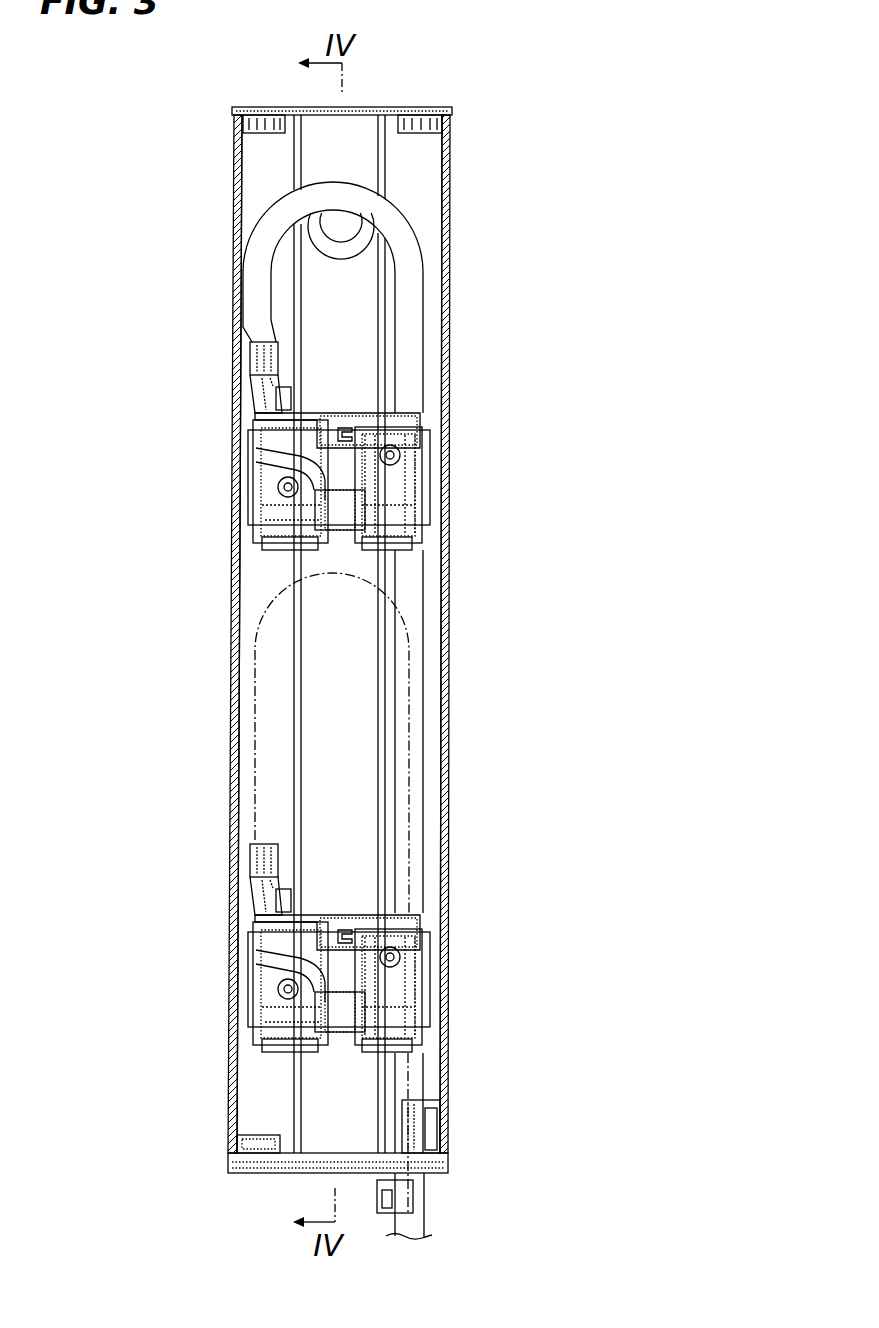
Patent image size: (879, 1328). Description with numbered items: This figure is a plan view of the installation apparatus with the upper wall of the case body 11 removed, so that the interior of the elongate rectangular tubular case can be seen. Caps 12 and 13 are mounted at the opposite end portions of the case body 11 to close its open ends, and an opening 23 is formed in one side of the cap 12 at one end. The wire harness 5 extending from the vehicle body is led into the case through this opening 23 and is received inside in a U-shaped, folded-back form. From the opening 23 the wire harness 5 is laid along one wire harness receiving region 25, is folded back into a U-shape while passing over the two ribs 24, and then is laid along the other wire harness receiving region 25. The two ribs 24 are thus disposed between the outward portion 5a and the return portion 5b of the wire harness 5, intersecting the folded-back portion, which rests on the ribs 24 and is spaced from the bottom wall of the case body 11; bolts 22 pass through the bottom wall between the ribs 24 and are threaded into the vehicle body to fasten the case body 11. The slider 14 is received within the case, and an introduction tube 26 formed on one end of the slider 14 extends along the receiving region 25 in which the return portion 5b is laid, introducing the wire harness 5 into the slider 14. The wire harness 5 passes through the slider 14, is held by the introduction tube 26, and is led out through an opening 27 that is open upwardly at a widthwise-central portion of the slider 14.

The wire harness 5 is at (434, 1224).
The outward portion 5a is at (415, 370).
The return portion 5b is at (257, 296).
The case body 11 is at (461, 256).
The cap 12 is at (220, 1168).
The cap 13 is at (224, 107).
The slider 14 is at (343, 732).
The bolt 22 is at (317, 232).
The opening 23 is at (438, 1168).
The rib 24 is at (293, 148).
The wire harness receiving region 25 is at (258, 188).
The introduction tube 26 is at (247, 372).
The opening 27 is at (337, 518).